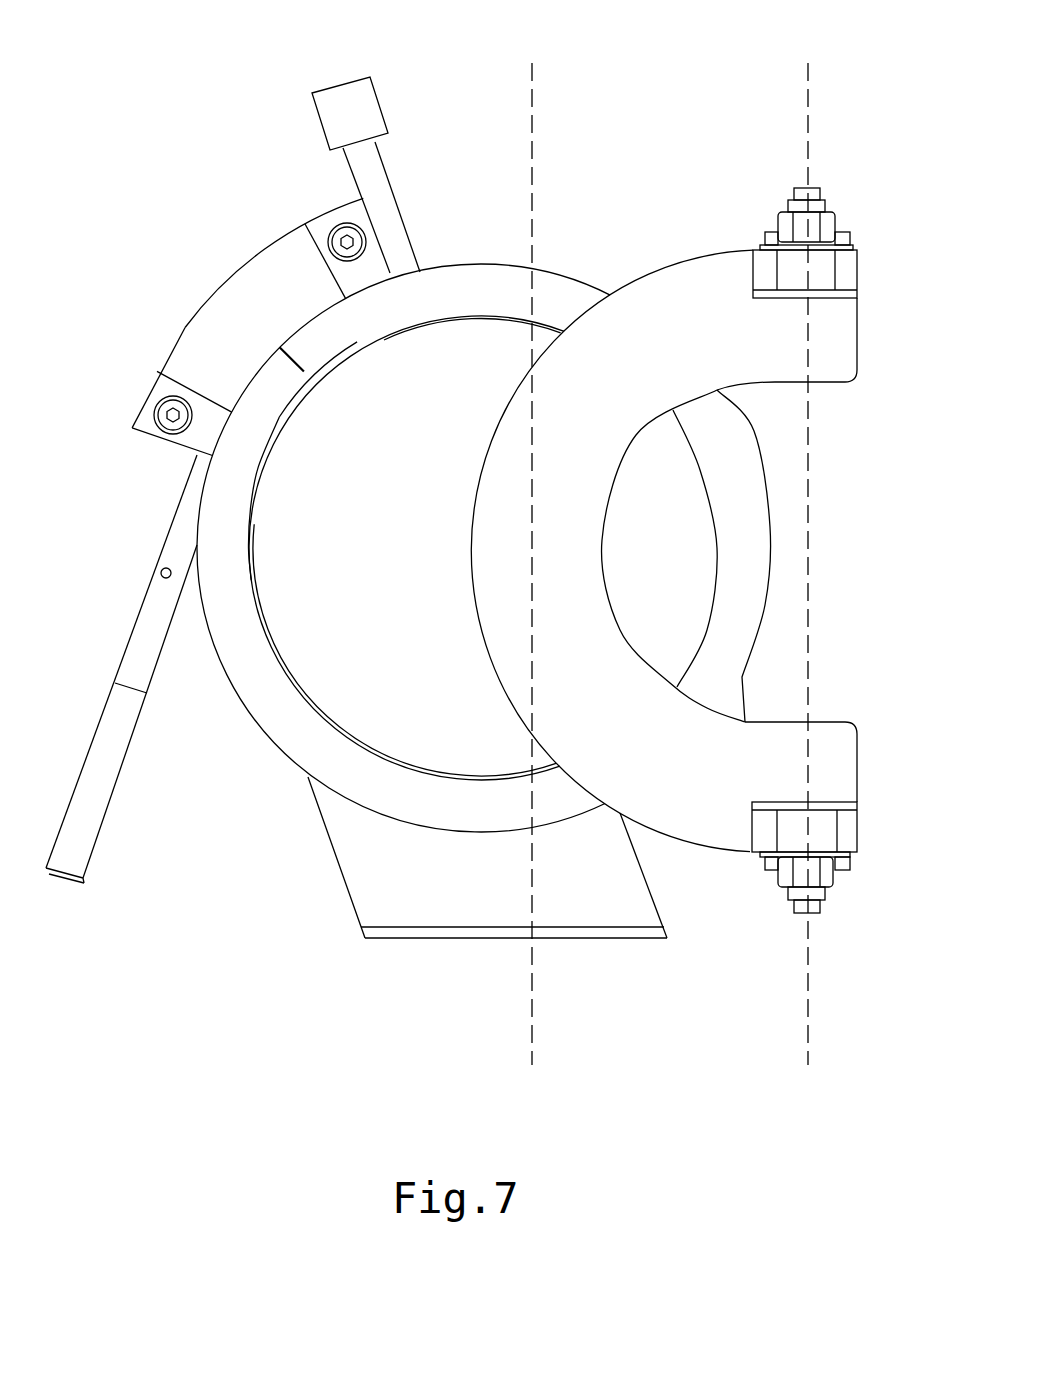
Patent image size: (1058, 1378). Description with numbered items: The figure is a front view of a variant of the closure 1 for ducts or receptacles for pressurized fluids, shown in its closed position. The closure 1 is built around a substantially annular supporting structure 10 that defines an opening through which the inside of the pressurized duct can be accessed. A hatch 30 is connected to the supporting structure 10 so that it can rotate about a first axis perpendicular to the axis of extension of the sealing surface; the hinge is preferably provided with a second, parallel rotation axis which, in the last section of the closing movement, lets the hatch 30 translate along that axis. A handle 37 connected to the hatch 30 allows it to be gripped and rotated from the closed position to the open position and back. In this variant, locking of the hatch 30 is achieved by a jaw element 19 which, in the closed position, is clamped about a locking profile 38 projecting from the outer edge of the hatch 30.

The closure 1 is at (676, 127).
The supporting structure 10 is at (469, 226).
The jaw element 19 is at (285, 722).
The hatch 30 is at (398, 569).
The handle 37 is at (833, 777).
The locking profile 38 is at (305, 397).